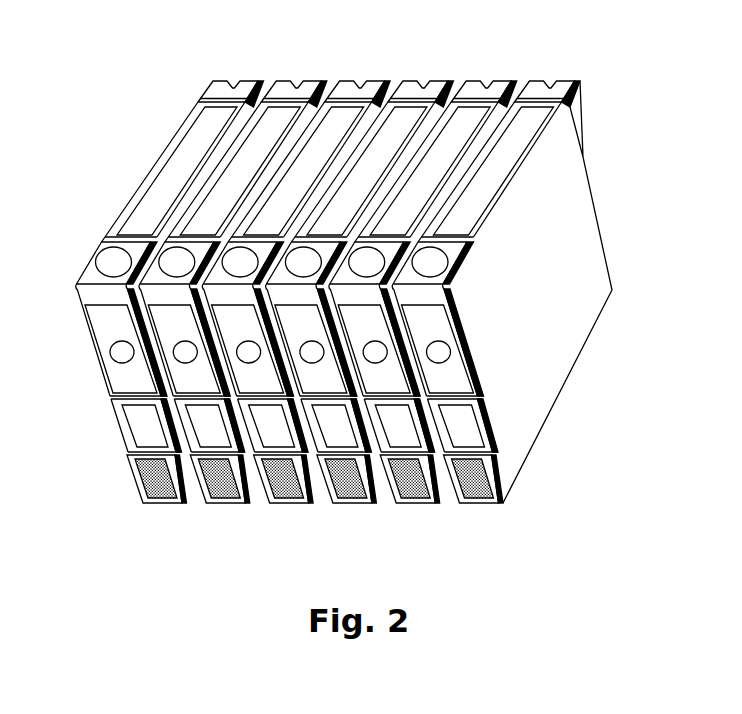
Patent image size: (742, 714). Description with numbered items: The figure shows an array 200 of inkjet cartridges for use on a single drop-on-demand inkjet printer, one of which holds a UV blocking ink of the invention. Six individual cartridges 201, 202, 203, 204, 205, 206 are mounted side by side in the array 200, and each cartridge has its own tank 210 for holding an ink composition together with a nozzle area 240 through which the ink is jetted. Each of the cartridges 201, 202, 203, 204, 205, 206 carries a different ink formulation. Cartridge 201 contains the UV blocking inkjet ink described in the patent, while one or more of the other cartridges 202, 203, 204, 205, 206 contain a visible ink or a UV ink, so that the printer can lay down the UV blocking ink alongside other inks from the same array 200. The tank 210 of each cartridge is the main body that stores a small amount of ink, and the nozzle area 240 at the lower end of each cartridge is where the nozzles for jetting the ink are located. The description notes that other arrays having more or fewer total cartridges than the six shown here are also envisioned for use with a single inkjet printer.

The array 200 is at (334, 301).
The cartridge 201 is at (103, 257).
The cartridge 202 is at (165, 258).
The cartridge 203 is at (234, 257).
The cartridge 204 is at (433, 256).
The cartridge 205 is at (371, 252).
The cartridge 206 is at (311, 251).
The tank 210 is at (553, 332).
The nozzle area 240 is at (481, 494).